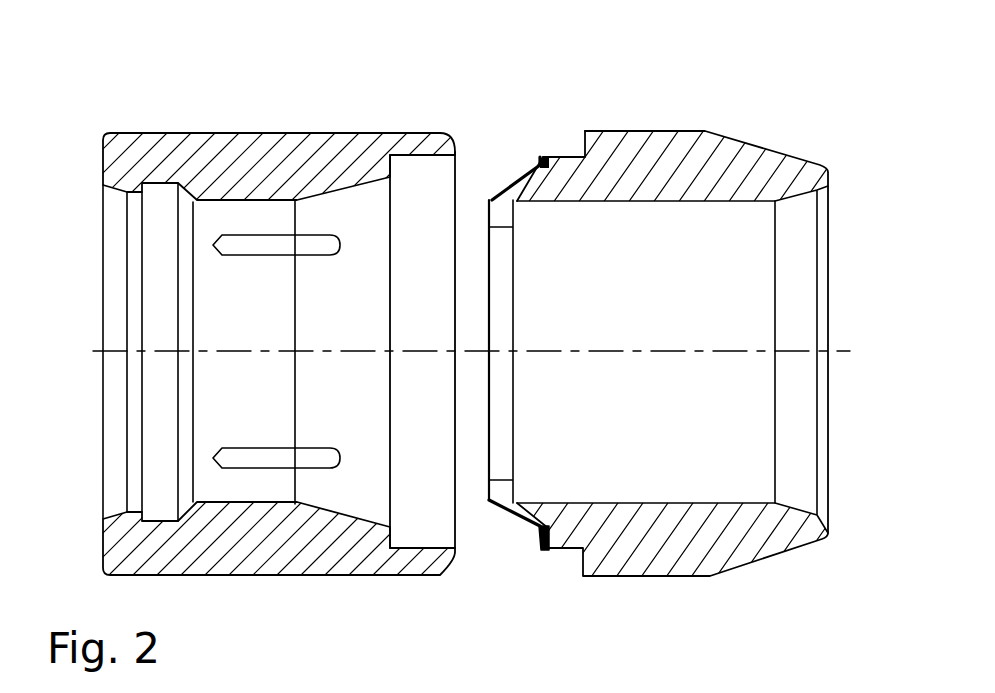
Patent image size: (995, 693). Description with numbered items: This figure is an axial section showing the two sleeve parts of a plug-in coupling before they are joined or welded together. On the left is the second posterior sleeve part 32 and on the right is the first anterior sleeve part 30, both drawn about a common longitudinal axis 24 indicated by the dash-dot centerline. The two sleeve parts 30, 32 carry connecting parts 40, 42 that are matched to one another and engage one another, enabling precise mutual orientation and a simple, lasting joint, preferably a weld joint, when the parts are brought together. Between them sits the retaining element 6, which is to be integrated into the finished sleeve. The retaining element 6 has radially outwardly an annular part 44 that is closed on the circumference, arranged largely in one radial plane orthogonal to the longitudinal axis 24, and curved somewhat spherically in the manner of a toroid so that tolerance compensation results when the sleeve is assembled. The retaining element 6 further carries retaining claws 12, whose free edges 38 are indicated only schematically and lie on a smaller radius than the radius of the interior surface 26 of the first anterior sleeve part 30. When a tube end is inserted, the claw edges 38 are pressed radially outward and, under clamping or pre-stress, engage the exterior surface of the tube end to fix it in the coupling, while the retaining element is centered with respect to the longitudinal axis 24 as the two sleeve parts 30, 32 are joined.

The second posterior sleeve part 32 is at (157, 153).
The connecting part 42 is at (418, 155).
The first anterior sleeve part 30 is at (663, 147).
The connecting part 40 is at (570, 157).
The annular part 44 is at (538, 158).
The free edges 38 is at (487, 453).
The retaining claws 12 is at (498, 503).
The retaining element 6 is at (545, 550).
The interior surface 26 is at (687, 494).
The longitudinal axis 24 is at (712, 352).